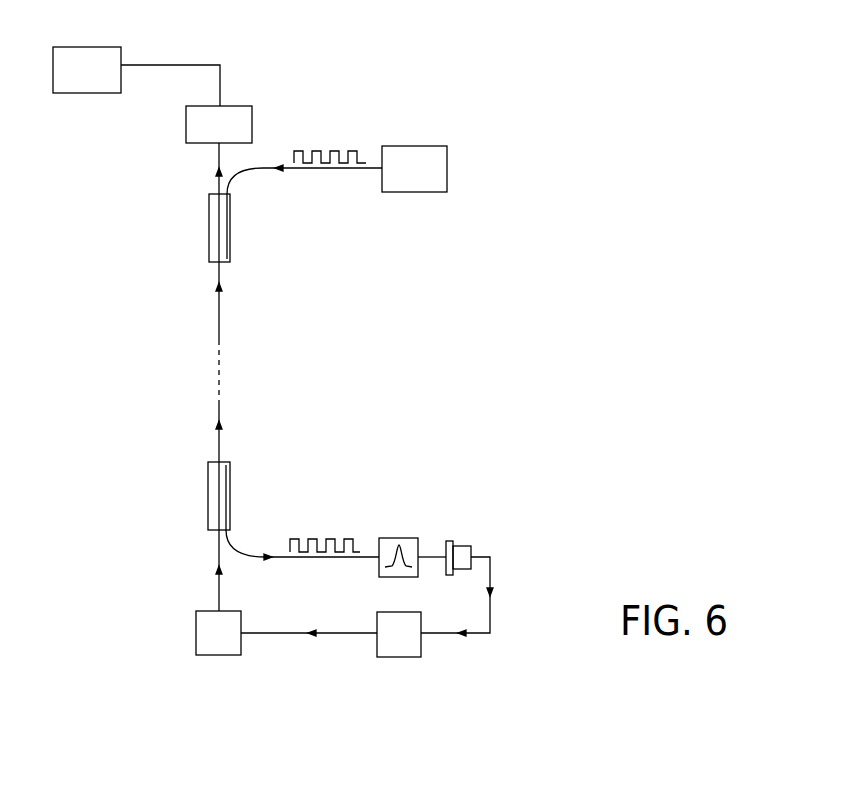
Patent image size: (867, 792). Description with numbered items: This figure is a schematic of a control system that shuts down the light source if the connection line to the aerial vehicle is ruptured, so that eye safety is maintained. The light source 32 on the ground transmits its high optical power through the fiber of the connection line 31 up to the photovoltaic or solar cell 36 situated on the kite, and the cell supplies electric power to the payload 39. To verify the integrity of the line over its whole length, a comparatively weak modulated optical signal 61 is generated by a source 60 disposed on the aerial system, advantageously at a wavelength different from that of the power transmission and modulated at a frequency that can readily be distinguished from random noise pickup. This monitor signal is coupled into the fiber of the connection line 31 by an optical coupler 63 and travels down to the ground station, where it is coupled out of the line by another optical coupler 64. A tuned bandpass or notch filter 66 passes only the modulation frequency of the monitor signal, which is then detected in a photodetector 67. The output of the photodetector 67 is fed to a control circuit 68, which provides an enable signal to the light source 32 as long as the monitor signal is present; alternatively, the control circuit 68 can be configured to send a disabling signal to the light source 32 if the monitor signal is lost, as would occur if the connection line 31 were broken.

The connection line 31 is at (219, 315).
The light source 32 is at (196, 630).
The photovoltaic or solar cell 36 is at (252, 121).
The payload 39 is at (82, 93).
The source 60 is at (447, 168).
The modulated optical signal 61 is at (343, 151).
The optical coupler 63 is at (209, 226).
The optical coupler 64 is at (208, 495).
The tuned bandpass or notch filter 66 is at (399, 538).
The photodetector 67 is at (460, 546).
The control circuit 68 is at (377, 645).